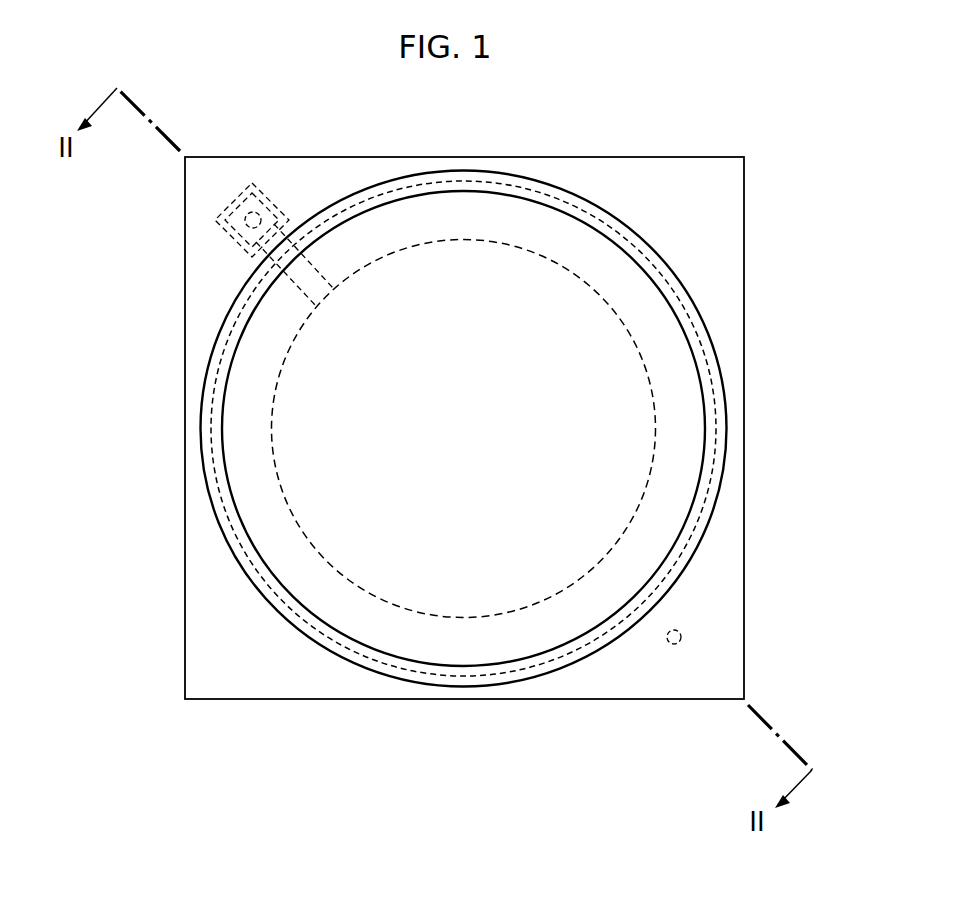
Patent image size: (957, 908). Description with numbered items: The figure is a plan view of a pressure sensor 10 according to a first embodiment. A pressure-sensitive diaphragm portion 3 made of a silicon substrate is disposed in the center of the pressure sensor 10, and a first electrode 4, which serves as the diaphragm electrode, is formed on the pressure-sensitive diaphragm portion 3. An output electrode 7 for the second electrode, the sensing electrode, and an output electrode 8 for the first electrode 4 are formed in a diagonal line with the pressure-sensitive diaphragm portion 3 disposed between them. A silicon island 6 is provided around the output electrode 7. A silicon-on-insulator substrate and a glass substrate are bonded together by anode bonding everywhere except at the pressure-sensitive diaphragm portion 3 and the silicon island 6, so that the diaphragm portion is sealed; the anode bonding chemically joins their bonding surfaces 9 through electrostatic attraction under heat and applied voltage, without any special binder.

The pressure-sensitive diaphragm portion 3 is at (507, 429).
The first electrode 4 is at (637, 370).
The silicon island 6 is at (268, 198).
The output electrode for the second electrode 7 is at (237, 242).
The output electrode for the first electrode 8 is at (674, 645).
The bonding surfaces 9 is at (255, 667).
The pressure sensor 10 is at (479, 434).